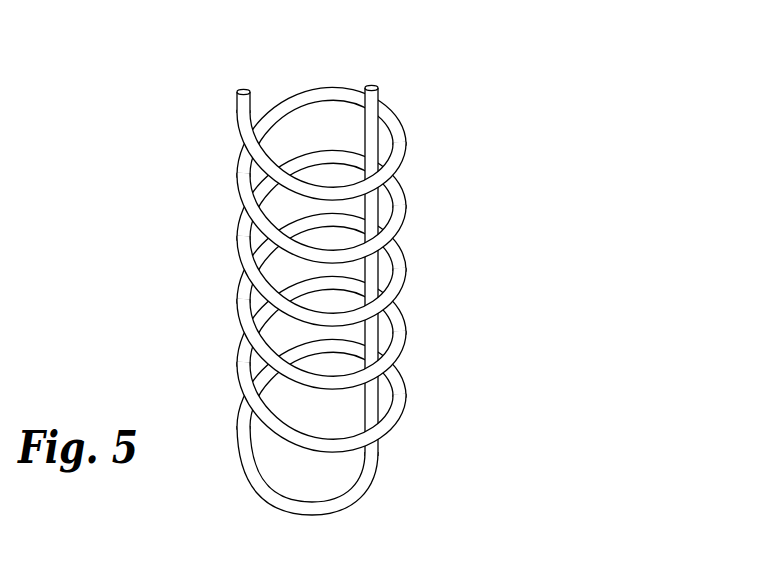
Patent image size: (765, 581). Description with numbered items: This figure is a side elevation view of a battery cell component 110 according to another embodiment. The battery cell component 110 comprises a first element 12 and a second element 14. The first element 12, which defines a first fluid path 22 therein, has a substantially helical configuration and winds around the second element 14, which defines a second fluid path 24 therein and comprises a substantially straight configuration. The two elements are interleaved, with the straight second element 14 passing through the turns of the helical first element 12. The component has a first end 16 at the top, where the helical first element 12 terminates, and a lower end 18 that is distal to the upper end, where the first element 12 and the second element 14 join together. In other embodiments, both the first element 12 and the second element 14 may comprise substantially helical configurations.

The battery cell component 110 is at (624, 83).
The first element 12 is at (212, 162).
The second element 14 is at (392, 197).
The first end 16 is at (212, 85).
The lower end 18 is at (398, 457).
The first fluid path 22 is at (250, 82).
The second fluid path 24 is at (374, 88).